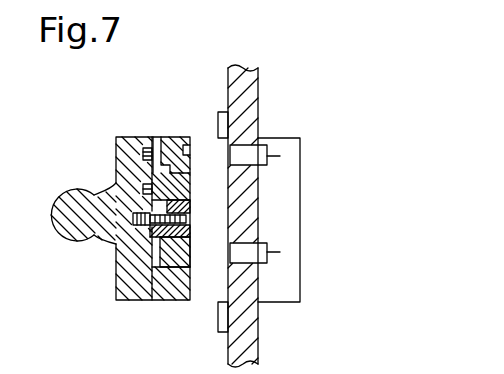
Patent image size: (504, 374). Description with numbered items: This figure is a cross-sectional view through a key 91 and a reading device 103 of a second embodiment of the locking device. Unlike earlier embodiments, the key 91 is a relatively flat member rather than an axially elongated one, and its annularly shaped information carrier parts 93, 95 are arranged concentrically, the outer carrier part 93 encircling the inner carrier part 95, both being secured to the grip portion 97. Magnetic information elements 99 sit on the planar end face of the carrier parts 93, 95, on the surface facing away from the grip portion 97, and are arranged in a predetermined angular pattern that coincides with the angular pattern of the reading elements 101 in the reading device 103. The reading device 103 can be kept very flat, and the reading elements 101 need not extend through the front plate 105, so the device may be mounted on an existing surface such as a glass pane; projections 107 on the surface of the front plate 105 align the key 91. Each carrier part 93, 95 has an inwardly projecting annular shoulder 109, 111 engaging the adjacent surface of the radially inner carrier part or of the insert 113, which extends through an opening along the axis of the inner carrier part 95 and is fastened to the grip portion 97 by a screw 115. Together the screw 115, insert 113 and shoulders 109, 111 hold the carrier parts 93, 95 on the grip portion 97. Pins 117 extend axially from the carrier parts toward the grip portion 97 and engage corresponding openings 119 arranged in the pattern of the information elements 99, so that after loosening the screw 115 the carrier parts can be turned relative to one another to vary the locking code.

The key 91 is at (75, 130).
The information carrier part 93 is at (172, 137).
The information carrier part 95 is at (181, 188).
The grip portion 97 is at (60, 204).
The information elements 99 is at (186, 150).
The reading elements 101 is at (267, 164).
The reading device 103 is at (314, 230).
The front plate 105 is at (253, 345).
The projections 107 is at (221, 117).
The annular shoulder 109 is at (160, 172).
The annular shoulder 111 is at (116, 263).
The insert 113 is at (186, 236).
The screw 115 is at (110, 243).
The pins 117 is at (147, 146).
The openings 119 is at (149, 160).